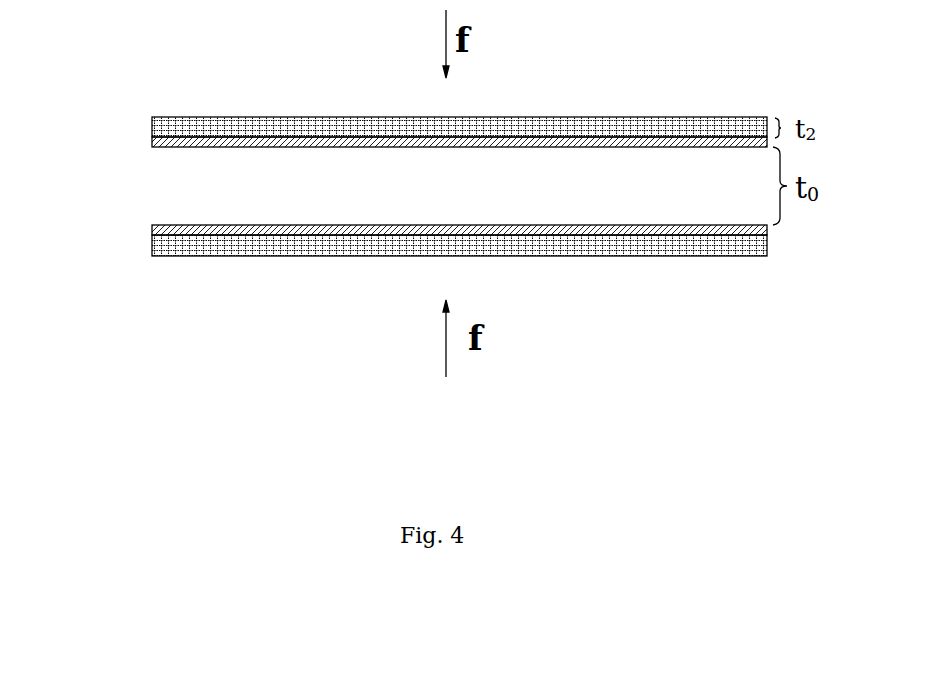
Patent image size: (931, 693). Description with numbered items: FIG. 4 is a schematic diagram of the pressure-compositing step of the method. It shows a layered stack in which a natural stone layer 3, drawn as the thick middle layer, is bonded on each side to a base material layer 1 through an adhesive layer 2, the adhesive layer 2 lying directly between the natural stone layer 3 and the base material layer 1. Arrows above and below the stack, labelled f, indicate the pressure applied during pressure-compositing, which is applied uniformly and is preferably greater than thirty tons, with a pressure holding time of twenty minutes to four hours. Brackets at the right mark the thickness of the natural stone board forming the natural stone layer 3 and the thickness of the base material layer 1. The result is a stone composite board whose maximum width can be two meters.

The base material layer 1 is at (153, 122).
The adhesive layer 2 is at (153, 142).
The natural stone layer 3 is at (153, 187).